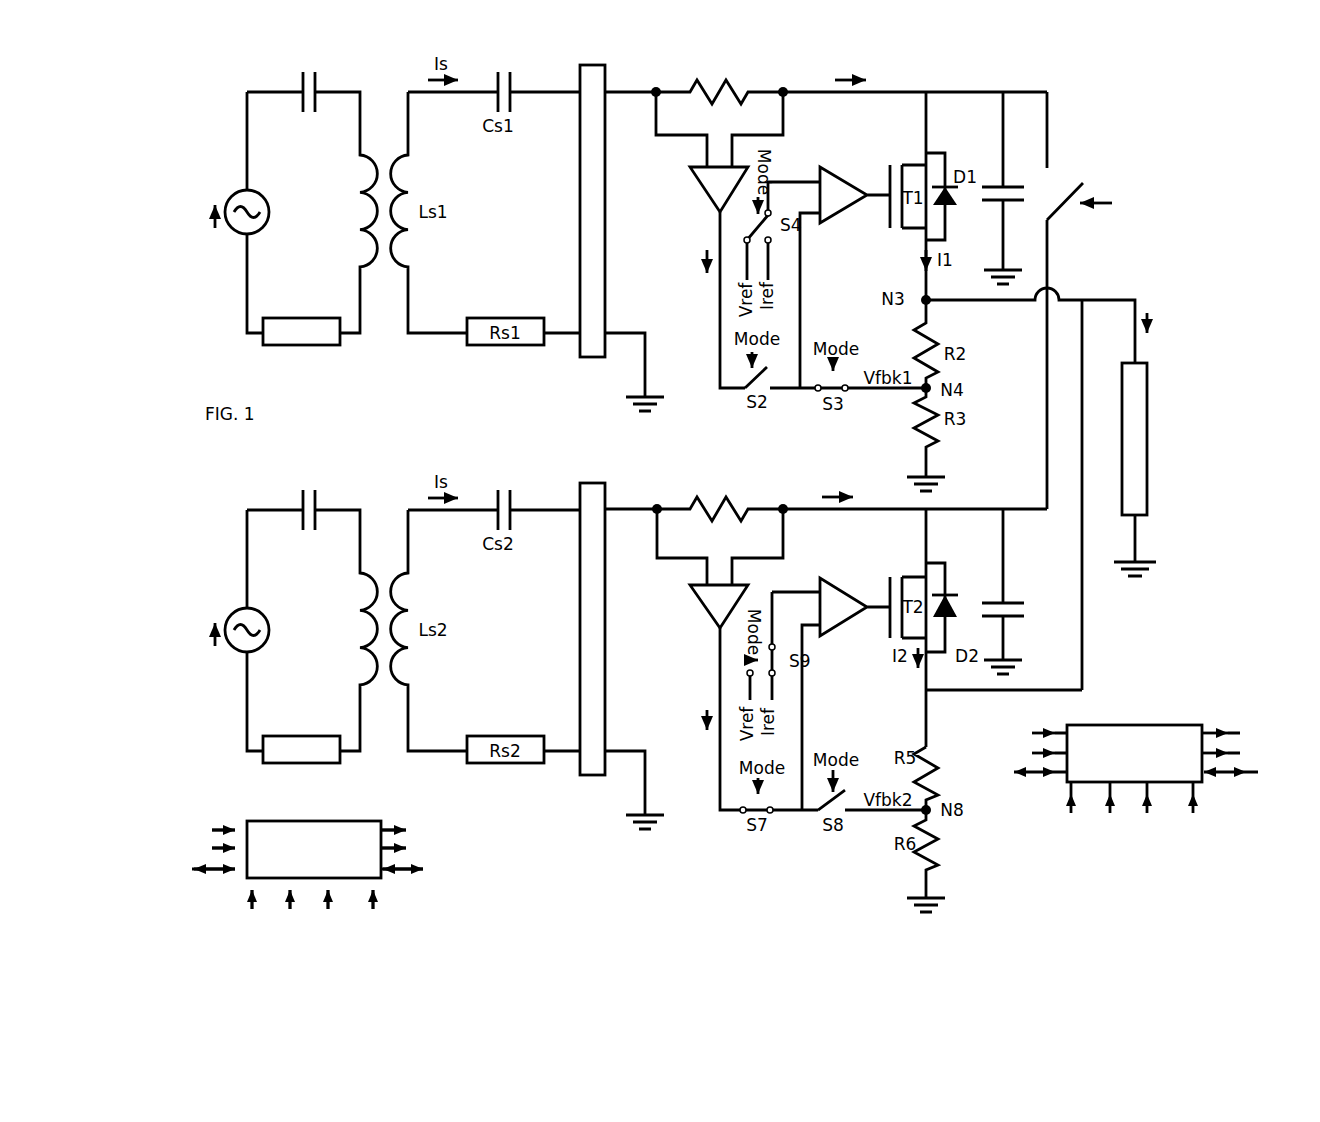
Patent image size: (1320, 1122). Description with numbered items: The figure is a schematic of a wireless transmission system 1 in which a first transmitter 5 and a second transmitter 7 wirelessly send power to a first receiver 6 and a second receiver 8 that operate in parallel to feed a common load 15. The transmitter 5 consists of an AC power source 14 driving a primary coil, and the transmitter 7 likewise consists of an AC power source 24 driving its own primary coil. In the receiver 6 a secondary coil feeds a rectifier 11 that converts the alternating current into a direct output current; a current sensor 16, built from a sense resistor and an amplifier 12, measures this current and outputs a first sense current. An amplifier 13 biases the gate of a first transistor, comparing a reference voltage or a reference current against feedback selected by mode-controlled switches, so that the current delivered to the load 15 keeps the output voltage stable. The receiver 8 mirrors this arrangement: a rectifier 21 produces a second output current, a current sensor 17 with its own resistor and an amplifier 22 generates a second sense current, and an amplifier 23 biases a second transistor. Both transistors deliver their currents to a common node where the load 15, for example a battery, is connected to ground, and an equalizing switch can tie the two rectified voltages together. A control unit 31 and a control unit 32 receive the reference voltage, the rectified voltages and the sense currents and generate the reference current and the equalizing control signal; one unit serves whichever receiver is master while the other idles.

The wireless transmission system 1 is at (1210, 73).
The first transmitter 5 is at (229, 72).
The first receiver 6 is at (1085, 80).
The second transmitter 7 is at (229, 490).
The second receiver 8 is at (756, 463).
The rectifier 11 is at (590, 360).
The amplifier 12 is at (704, 198).
The amplifier 13 is at (846, 178).
The AC power source 14 is at (264, 198).
The load 15 is at (1119, 386).
The current sensor 16 is at (758, 58).
The current sensor 17 is at (681, 486).
The rectifier 21 is at (592, 777).
The amplifier 22 is at (704, 614).
The amplifier 23 is at (846, 593).
The AC power source 24 is at (264, 616).
The control unit 31 is at (350, 820).
The control unit 32 is at (1172, 726).